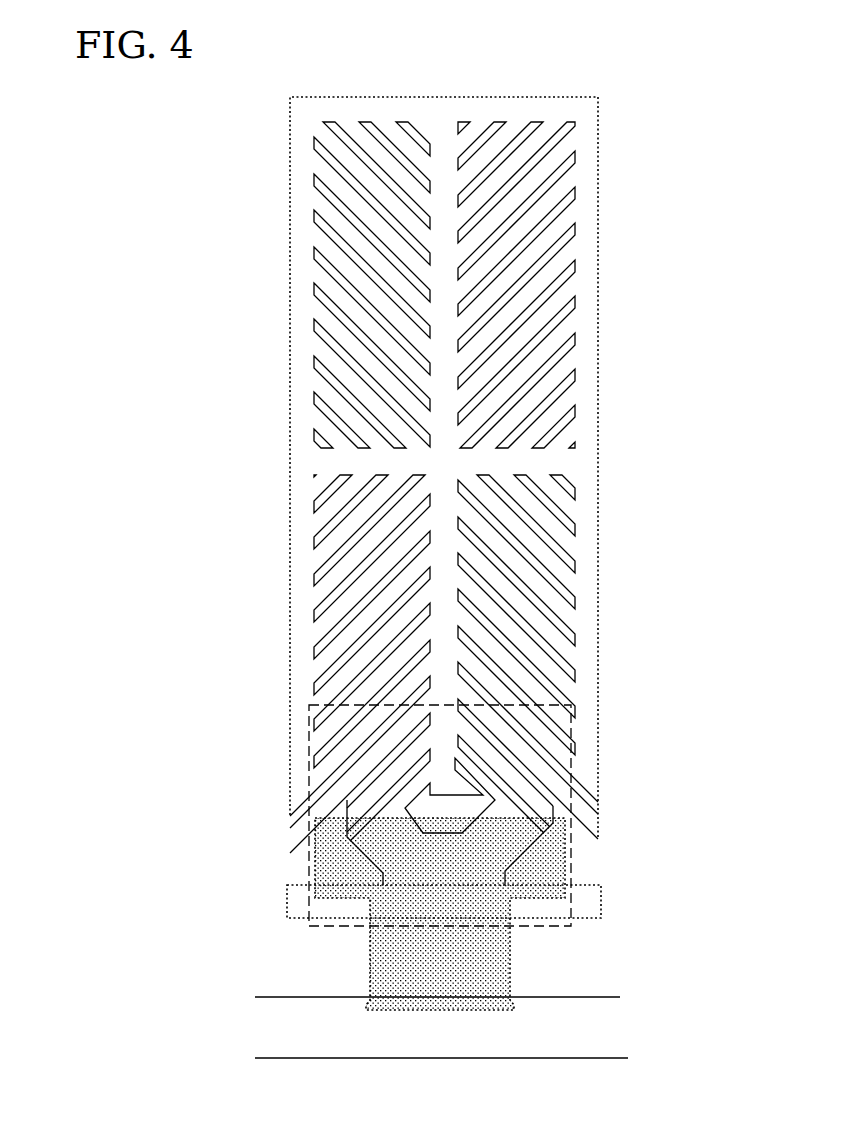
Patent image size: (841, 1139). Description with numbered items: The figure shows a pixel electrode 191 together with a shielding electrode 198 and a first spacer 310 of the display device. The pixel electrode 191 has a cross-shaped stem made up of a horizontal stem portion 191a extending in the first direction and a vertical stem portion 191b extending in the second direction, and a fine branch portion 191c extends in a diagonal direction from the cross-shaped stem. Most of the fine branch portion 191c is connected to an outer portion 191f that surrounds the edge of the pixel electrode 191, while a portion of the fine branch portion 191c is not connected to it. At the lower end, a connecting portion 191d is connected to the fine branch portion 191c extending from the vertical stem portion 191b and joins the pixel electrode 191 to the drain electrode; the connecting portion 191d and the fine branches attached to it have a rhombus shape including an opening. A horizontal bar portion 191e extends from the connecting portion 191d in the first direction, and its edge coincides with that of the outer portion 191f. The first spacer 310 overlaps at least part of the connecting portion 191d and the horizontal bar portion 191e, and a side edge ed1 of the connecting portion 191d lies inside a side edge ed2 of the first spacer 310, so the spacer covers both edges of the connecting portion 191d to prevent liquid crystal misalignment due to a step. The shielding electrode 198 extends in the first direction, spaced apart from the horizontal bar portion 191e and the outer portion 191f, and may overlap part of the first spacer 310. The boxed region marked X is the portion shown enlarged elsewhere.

The pixel electrode 191 is at (730, 905).
The horizontal stem portion 191a is at (545, 462).
The vertical stem portion 191b is at (440, 272).
The fine branch portion 191c is at (545, 557).
The connecting portion 191d is at (527, 790).
The horizontal bar portion 191e is at (585, 908).
The outer portion 191f is at (585, 393).
The side edge of the connecting portion ed1 is at (570, 807).
The side edge of the first spacer ed2 is at (570, 860).
The X area X is at (578, 713).
The first spacer 310 is at (314, 856).
The shielding electrode 198 is at (632, 997).